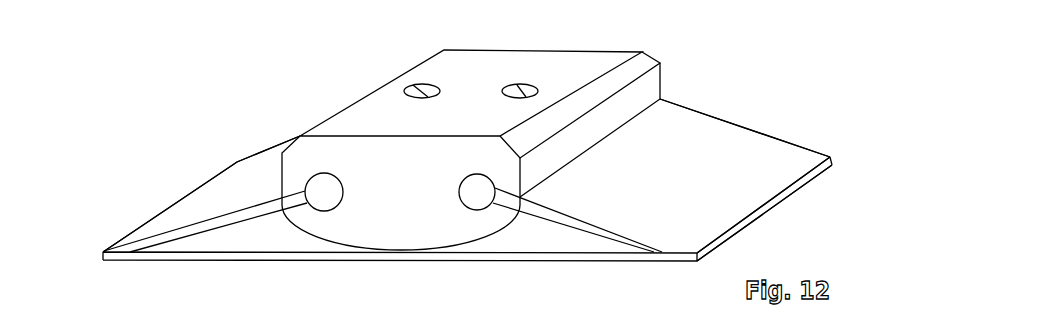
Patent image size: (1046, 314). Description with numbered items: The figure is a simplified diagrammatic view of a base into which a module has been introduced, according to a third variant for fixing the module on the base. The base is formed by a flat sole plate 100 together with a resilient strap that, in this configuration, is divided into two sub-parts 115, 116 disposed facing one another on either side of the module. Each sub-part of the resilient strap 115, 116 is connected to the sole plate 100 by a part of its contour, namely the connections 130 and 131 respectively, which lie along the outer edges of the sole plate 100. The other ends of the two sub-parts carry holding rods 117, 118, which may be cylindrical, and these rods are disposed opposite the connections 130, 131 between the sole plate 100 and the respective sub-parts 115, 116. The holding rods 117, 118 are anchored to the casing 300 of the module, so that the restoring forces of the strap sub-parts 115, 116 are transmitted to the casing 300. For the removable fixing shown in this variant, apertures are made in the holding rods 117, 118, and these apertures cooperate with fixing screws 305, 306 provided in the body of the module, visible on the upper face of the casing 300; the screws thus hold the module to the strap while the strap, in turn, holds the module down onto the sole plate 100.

The sole plate 100 is at (450, 257).
The first sub-part of the resilient strap 115 is at (270, 147).
The second sub-part of the resilient strap 116 is at (698, 108).
The holding rod 117 is at (319, 193).
The holding rod 118 is at (476, 200).
The connection contour 130 is at (165, 212).
The connection contour 131 is at (733, 228).
The casing of the module 300 is at (480, 77).
The fixing screw 305 is at (418, 90).
The fixing screw 306 is at (518, 90).